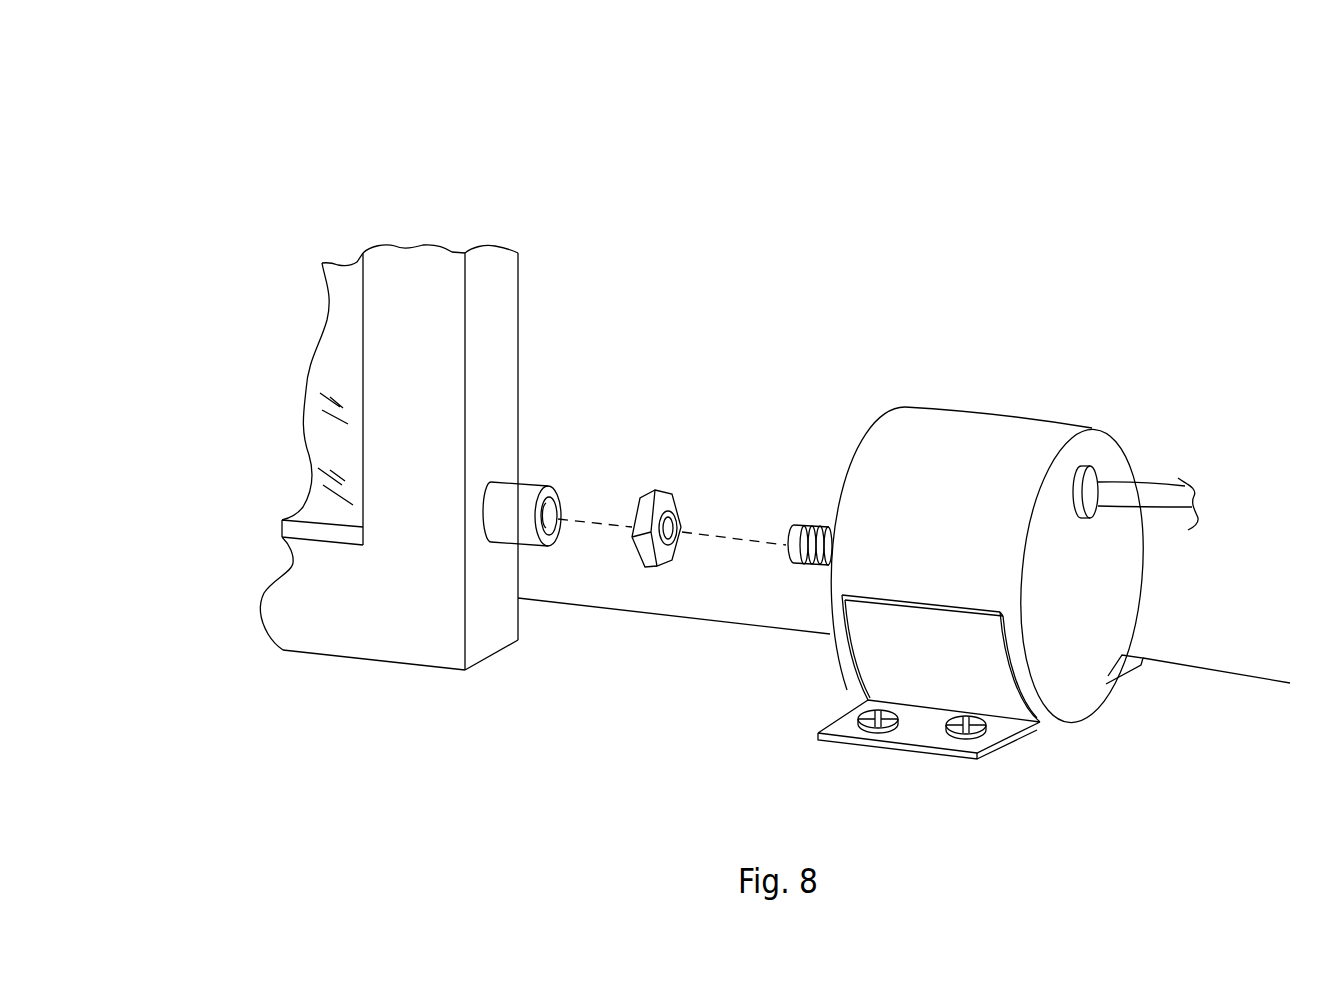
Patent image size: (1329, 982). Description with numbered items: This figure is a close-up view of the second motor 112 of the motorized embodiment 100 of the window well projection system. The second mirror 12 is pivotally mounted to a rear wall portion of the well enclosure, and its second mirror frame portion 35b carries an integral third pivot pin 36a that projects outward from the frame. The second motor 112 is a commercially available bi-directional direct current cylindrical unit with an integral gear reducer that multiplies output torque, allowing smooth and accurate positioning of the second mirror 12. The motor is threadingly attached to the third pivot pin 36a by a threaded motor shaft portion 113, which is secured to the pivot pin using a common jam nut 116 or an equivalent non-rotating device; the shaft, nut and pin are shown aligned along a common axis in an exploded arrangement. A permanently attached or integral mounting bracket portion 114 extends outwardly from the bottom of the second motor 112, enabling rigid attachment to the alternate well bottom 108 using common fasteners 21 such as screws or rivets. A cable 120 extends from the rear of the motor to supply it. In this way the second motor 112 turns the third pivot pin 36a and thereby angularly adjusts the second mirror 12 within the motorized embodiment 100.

The motorized embodiment 100 is at (303, 171).
The second mirror 12 is at (327, 377).
The second mirror frame portion 35b is at (498, 290).
The third pivot pin 36a is at (520, 497).
The jam nut 116 is at (645, 556).
The threaded motor shaft portion 113 is at (803, 525).
The second motor 112 is at (983, 445).
The cable 120 is at (1157, 493).
The mounting bracket portion 114 is at (1136, 608).
The fasteners 21 is at (878, 724).
The alternate well bottom 108 is at (740, 717).